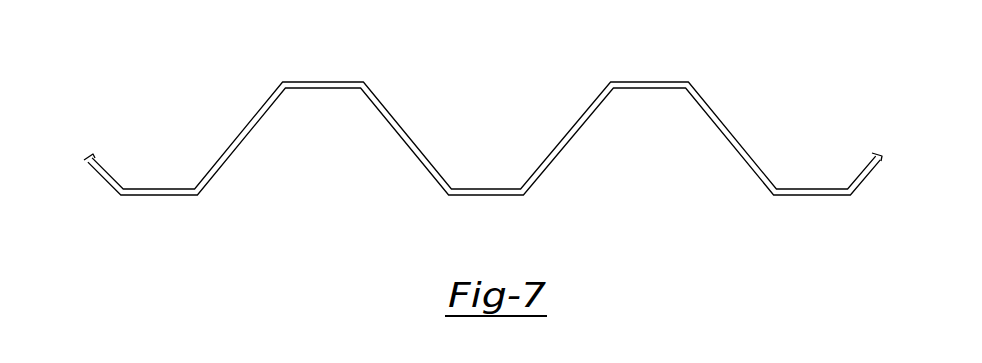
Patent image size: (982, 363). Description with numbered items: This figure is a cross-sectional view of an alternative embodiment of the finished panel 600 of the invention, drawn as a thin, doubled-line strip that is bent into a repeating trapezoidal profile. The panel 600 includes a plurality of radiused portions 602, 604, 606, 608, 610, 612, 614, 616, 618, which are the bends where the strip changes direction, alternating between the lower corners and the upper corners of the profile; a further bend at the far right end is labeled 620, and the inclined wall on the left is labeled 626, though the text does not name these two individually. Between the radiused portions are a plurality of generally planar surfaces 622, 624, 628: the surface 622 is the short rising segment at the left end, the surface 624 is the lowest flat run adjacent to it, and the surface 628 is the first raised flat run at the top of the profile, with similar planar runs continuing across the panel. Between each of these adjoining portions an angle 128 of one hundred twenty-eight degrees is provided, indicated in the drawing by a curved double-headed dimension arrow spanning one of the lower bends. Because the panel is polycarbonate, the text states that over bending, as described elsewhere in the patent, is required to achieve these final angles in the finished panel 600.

The panel 600 is at (197, 81).
The radiused portion 602 is at (123, 197).
The radiused portion 604 is at (196, 197).
The radiused portion 606 is at (282, 82).
The radiused portion 608 is at (362, 82).
The radiused portion 610 is at (448, 197).
The radiused portion 612 is at (522, 197).
The radiused portion 614 is at (610, 82).
The radiused portion 616 is at (687, 82).
The radiused portion 618 is at (773, 197).
The third bottom segment end 620 is at (848, 197).
The generally planar surface 622 is at (101, 181).
The generally planar surface 624 is at (158, 181).
The inclined wall 626 is at (243, 148).
The generally planar surface 628 is at (320, 81).
The angle of 128 degrees 128 is at (549, 152).